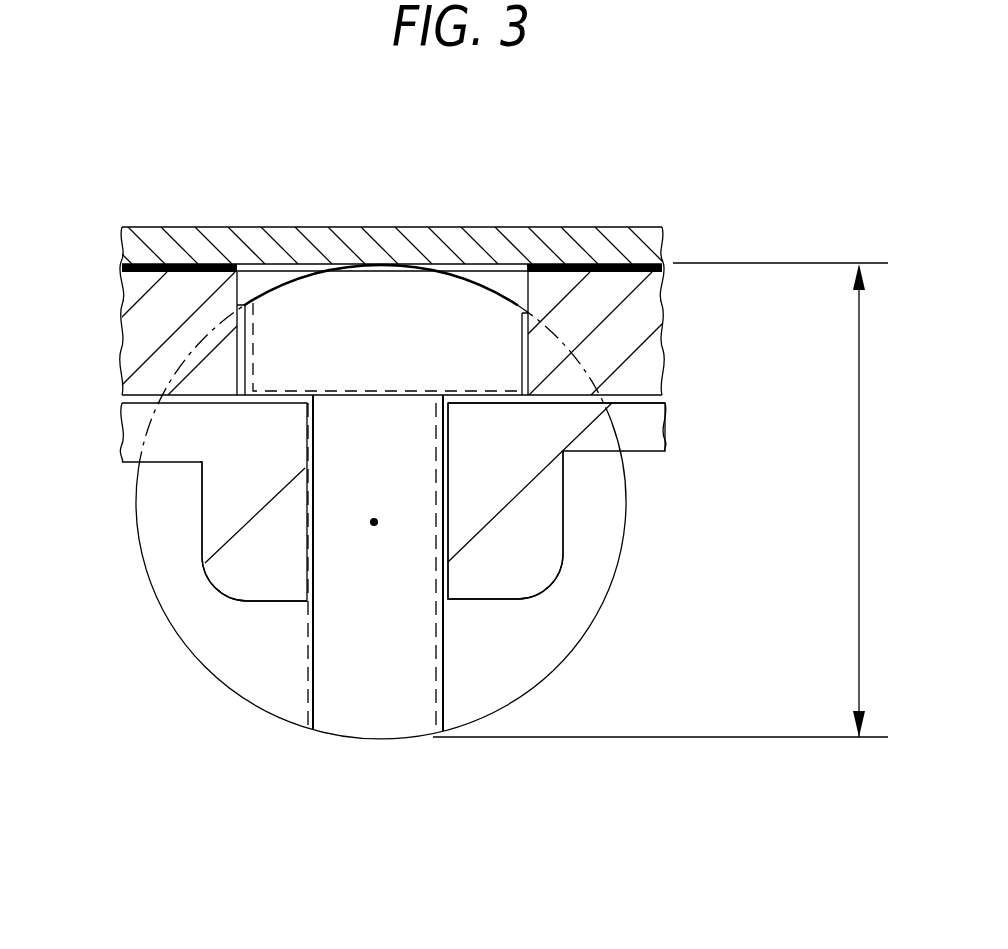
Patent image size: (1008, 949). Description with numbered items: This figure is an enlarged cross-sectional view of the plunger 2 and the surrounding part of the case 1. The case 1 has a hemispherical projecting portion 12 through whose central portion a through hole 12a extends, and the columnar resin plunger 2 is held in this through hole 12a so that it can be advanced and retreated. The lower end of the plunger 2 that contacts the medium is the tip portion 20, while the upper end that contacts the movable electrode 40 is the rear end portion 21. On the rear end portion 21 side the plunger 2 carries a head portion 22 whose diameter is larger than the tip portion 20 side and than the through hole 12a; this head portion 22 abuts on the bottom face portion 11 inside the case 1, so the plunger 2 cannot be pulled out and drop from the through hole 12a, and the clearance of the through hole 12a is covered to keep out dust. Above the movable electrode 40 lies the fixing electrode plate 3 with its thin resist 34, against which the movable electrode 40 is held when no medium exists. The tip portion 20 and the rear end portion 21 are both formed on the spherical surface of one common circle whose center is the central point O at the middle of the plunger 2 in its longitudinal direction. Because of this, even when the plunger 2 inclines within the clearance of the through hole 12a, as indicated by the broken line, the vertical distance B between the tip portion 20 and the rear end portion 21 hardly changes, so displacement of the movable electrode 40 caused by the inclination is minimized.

The case 1 is at (135, 438).
The plunger 2 is at (456, 683).
The fixing electrode plate 3 is at (135, 335).
The bottom face portion 11 is at (663, 414).
The projecting portion 12 is at (267, 601).
The through hole 12a is at (448, 518).
The tip portion 20 is at (378, 726).
The rear end portion 21 is at (376, 262).
The head portion 22 is at (460, 310).
The resist 34 is at (120, 270).
The movable electrode 40 is at (224, 242).
The vertical distance B is at (664, 500).
The central point O is at (375, 540).